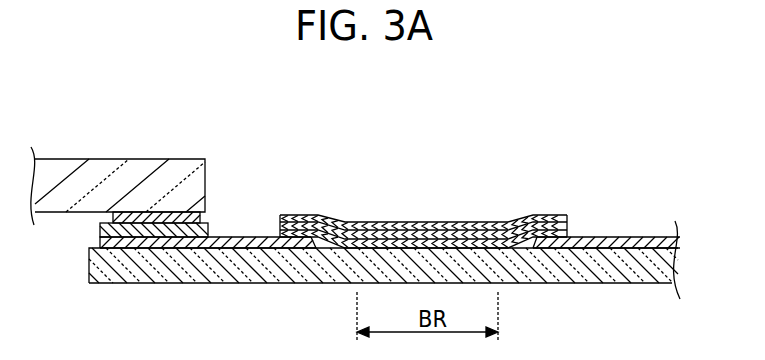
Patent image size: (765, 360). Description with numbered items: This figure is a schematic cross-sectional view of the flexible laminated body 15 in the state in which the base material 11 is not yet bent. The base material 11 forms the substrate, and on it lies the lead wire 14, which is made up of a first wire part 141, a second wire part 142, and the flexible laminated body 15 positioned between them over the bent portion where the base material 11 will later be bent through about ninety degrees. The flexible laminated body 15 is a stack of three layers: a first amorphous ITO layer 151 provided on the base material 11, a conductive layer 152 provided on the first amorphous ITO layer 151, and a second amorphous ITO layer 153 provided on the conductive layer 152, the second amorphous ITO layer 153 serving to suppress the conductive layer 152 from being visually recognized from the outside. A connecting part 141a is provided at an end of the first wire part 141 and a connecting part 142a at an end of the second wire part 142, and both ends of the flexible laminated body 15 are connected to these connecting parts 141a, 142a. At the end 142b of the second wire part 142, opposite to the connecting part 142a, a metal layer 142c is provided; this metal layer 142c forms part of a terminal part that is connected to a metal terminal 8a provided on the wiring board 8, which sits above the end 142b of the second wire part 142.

The wiring board 8 is at (95, 180).
The metal terminal 8a is at (158, 217).
The base material 11 is at (648, 268).
The lead wire 14 is at (392, 223).
The flexible laminated body 15 is at (432, 179).
The first wire part 141 is at (614, 184).
The connecting part 141a is at (553, 243).
The second wire part 142 is at (204, 227).
The connecting part 142a is at (297, 233).
The end 142b is at (113, 243).
The metal layer 142c is at (185, 228).
The first amorphous ITO layer 151 is at (460, 243).
The conductive layer 152 is at (452, 233).
The second amorphous ITO layer 153 is at (435, 222).